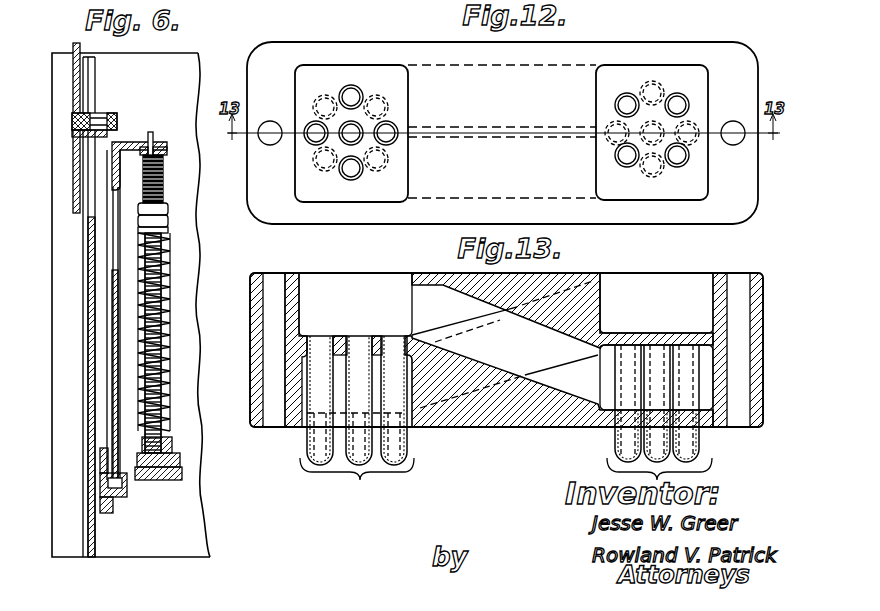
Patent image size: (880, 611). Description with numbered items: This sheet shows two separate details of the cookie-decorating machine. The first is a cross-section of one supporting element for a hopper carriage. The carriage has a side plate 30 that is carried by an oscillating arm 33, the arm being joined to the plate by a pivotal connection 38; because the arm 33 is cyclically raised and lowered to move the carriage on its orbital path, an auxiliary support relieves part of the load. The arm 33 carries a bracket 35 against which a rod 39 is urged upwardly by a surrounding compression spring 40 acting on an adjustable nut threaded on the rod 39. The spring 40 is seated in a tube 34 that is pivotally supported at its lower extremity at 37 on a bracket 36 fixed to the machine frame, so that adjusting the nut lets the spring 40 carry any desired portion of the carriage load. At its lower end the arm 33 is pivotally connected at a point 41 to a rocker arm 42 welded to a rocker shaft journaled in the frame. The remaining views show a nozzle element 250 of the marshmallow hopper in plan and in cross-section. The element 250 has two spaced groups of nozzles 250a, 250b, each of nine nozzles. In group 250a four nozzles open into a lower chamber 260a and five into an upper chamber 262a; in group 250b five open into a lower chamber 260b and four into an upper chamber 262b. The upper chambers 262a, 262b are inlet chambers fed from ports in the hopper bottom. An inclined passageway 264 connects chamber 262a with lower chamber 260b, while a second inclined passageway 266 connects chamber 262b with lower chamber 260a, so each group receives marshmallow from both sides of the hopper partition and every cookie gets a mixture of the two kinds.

In FIG. 6, the side plate 30 is at (73, 80).
In FIG. 6, the oscillating arm 33 is at (113, 223).
In FIG. 6, the tube 34 is at (173, 330).
In FIG. 6, the bracket 35 is at (130, 142).
In FIG. 6, the bracket 36 is at (175, 480).
In FIG. 6, the pivotal support 37 is at (180, 460).
In FIG. 6, the pivotal connection 38 is at (114, 121).
In FIG. 6, the rod 39 is at (153, 133).
In FIG. 6, the compression spring 40 is at (165, 242).
In FIG. 6, the pivotal connection point 41 is at (123, 488).
In FIG. 6, the rocker arm 42 is at (104, 513).
In FIG. 12, the nozzle element 250 is at (742, 53).
In FIG. 13, the nozzle element 250 is at (506, 350).
In FIG. 13, the nozzle group 250a is at (357, 479).
In FIG. 13, the nozzle group 250b is at (607, 470).
In FIG. 13, the lower chamber 260a is at (336, 375).
In FIG. 13, the lower chamber 260b is at (660, 358).
In FIG. 12, the upper chamber 262a is at (373, 78).
In FIG. 13, the upper chamber 262a is at (395, 283).
In FIG. 12, the upper chamber 262b is at (668, 77).
In FIG. 13, the upper chamber 262b is at (700, 284).
In FIG. 12, the inclined passageway 264 is at (575, 198).
In FIG. 13, the inclined passageway 264 is at (497, 348).
In FIG. 12, the inclined passageway 266 is at (570, 63).
In FIG. 13, the inclined passageway 266 is at (468, 388).